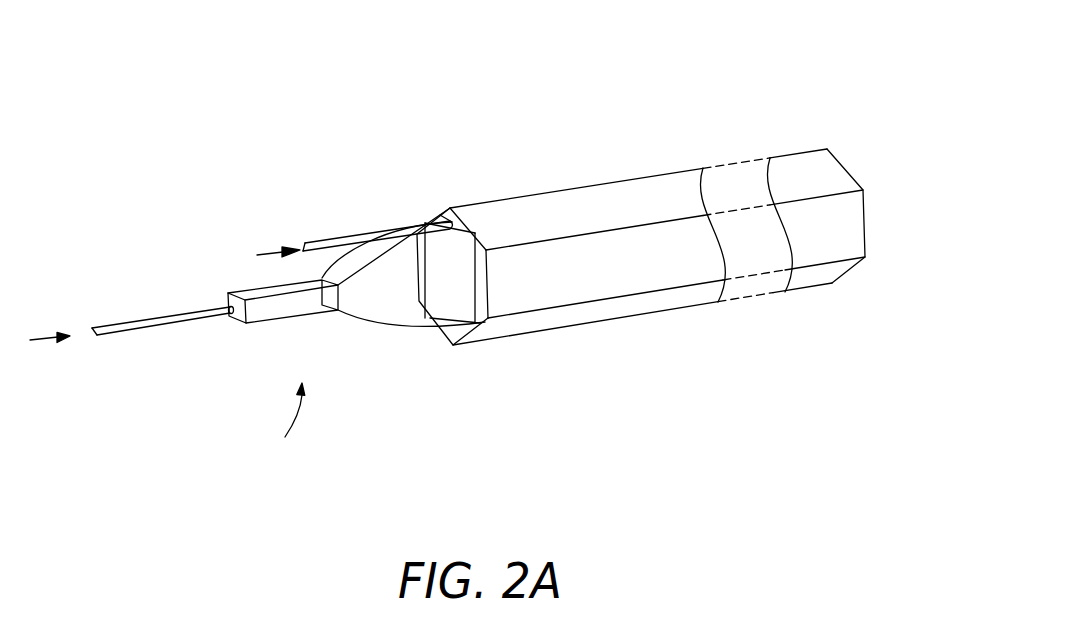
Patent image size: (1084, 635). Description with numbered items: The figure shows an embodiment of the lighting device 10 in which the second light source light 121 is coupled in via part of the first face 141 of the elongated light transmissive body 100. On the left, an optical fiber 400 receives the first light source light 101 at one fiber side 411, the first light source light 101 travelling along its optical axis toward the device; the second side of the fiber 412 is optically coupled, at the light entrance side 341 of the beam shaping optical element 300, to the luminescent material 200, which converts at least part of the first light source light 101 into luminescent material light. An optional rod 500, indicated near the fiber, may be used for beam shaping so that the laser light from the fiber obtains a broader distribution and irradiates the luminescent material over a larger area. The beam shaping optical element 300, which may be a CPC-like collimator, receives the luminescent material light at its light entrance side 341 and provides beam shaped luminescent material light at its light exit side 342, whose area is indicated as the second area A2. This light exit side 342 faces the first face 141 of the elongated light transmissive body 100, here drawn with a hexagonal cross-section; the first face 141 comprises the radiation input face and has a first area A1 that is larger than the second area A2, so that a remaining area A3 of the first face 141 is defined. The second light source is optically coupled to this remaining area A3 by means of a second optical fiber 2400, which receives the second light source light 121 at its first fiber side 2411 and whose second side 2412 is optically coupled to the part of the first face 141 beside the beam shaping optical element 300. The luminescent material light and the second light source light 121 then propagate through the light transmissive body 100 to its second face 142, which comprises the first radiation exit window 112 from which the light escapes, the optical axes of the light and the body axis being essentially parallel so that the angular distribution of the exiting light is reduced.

The lighting device 10 is at (124, 70).
The elongated light transmissive body 100 is at (574, 161).
The first radiation exit window 112 is at (846, 216).
The second face 142 is at (849, 151).
The first face 141 is at (385, 277).
The first area A1 is at (450, 228).
The light exit side 342 is at (456, 283).
The second area A2 is at (452, 273).
The remaining area A3 is at (489, 285).
The beam shaping optical element 300 is at (372, 118).
The light entrance side 341 is at (345, 302).
The luminescent material 200 is at (327, 307).
The optical fiber 400 is at (147, 292).
The fiber side 411 is at (85, 333).
The second side of the fiber 412 is at (232, 322).
The first light source light 101 is at (38, 333).
The second optical fiber 2400 is at (327, 240).
The first fiber side of the second optical fiber 2411 is at (300, 250).
The second side of the second optical fiber 2412 is at (450, 208).
The second light source light 121 is at (260, 254).
The rod 500 is at (271, 423).